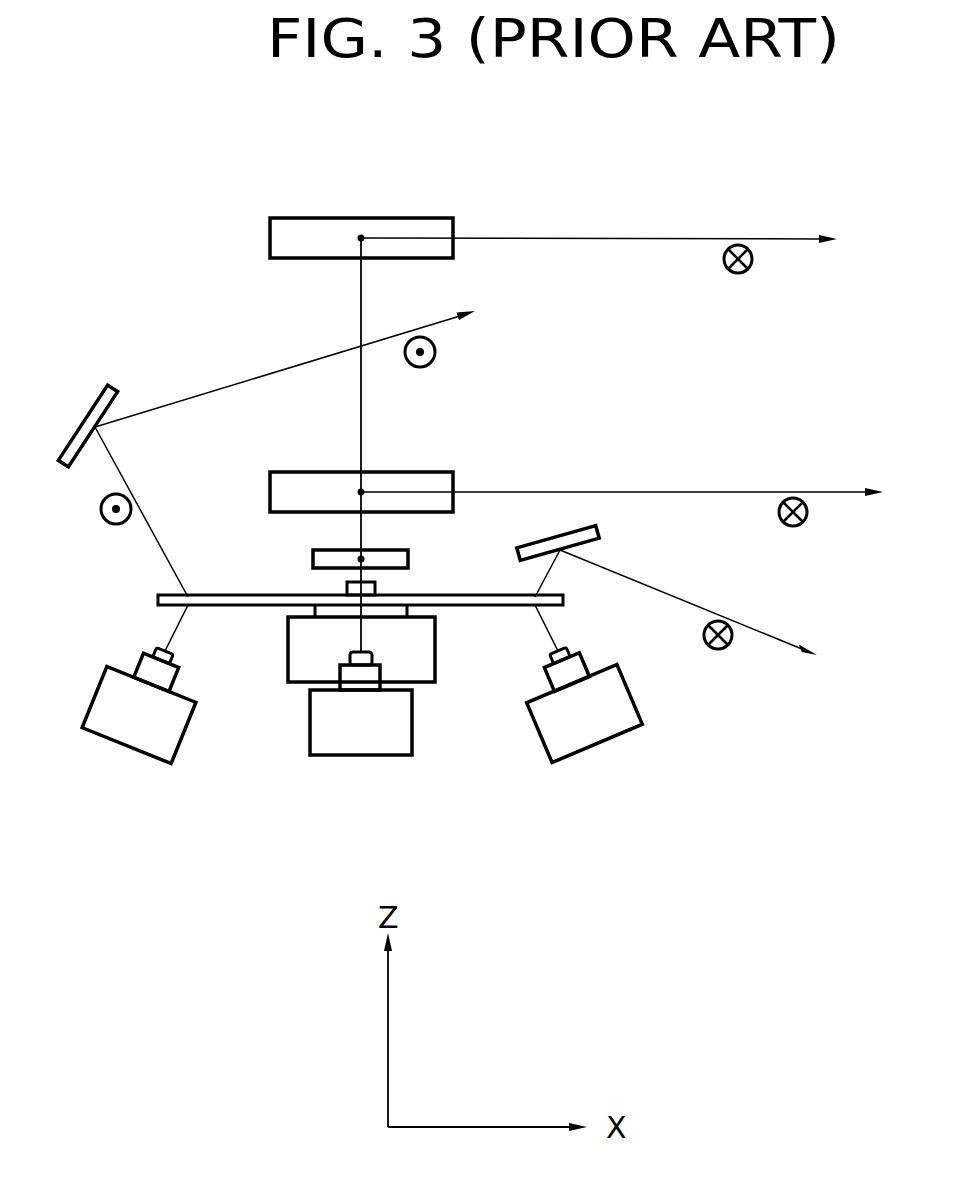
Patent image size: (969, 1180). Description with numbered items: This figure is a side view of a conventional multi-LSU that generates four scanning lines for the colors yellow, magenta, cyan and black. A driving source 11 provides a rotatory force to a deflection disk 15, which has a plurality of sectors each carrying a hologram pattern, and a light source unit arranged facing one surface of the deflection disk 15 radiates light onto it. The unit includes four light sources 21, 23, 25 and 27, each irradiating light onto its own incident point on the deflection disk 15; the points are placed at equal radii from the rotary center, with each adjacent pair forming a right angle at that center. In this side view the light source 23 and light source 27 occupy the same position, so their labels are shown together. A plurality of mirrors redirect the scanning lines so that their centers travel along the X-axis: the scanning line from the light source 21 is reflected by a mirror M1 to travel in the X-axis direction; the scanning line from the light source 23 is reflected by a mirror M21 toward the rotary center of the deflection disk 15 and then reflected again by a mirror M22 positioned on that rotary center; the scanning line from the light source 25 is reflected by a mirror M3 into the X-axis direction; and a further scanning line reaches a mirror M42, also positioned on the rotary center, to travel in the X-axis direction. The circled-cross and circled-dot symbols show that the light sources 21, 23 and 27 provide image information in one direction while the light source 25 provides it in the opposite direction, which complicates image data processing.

The mirror M42 is at (270, 238).
The mirror M22 is at (270, 490).
The mirror M21 is at (313, 558).
The mirror M3 is at (109, 382).
The mirror M1 is at (600, 532).
The deflection disk 15 is at (480, 606).
The driving source 11 is at (435, 682).
The light source 23 is at (361, 758).
The light source 27 is at (365, 756).
The light source 25 is at (122, 747).
The light source 21 is at (597, 747).